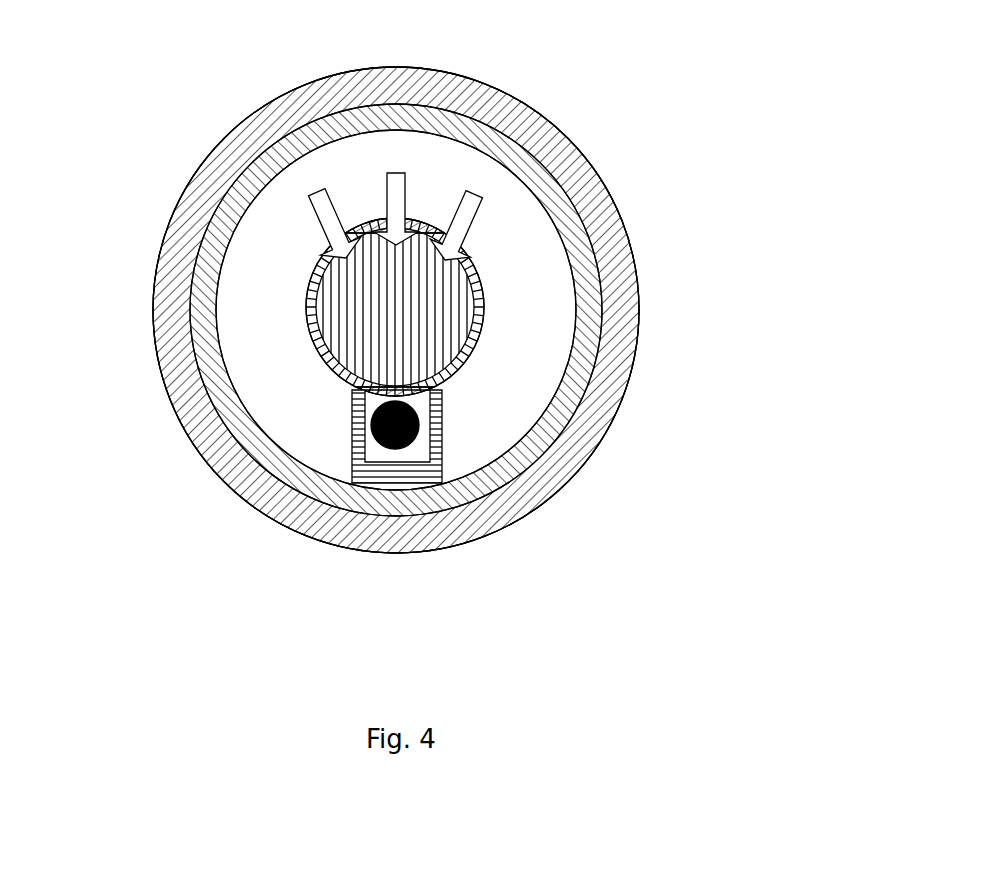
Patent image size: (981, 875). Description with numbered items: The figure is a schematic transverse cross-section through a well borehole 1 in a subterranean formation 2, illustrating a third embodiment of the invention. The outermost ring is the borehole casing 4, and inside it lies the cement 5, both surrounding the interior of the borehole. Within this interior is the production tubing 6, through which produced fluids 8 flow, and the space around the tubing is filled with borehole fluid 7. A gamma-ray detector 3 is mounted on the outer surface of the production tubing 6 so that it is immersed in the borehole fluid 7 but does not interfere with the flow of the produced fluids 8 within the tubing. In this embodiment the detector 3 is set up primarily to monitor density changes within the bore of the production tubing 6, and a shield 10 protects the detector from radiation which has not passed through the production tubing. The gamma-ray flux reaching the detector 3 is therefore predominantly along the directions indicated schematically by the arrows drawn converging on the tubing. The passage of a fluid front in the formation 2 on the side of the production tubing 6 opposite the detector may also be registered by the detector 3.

The well borehole 1 is at (556, 104).
The subterranean formation 2 is at (180, 92).
The gamma-ray detector 3 is at (396, 449).
The borehole casing 4 is at (190, 283).
The cement 5 is at (166, 367).
The production tubing 6 is at (322, 362).
The borehole fluid 7 is at (307, 442).
The produced fluids 8 is at (437, 318).
The shield 10 is at (442, 435).